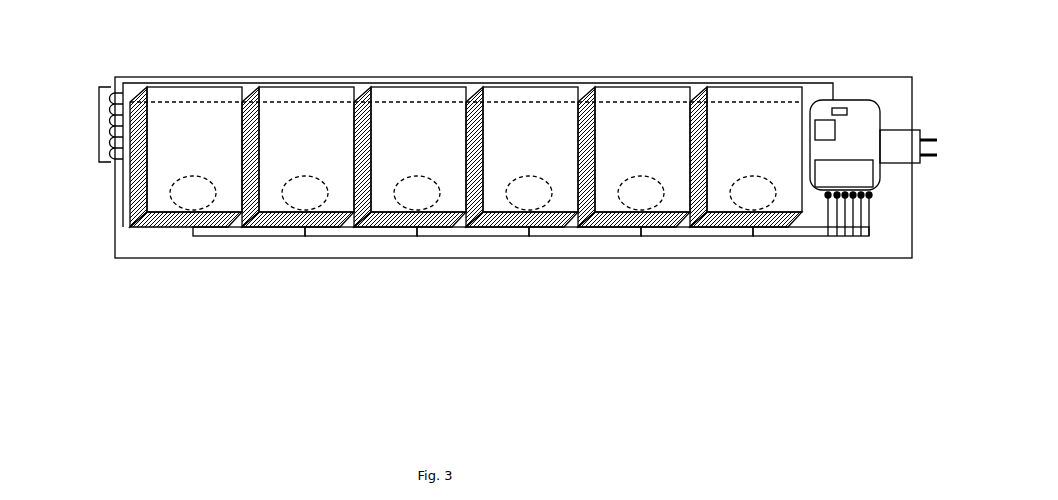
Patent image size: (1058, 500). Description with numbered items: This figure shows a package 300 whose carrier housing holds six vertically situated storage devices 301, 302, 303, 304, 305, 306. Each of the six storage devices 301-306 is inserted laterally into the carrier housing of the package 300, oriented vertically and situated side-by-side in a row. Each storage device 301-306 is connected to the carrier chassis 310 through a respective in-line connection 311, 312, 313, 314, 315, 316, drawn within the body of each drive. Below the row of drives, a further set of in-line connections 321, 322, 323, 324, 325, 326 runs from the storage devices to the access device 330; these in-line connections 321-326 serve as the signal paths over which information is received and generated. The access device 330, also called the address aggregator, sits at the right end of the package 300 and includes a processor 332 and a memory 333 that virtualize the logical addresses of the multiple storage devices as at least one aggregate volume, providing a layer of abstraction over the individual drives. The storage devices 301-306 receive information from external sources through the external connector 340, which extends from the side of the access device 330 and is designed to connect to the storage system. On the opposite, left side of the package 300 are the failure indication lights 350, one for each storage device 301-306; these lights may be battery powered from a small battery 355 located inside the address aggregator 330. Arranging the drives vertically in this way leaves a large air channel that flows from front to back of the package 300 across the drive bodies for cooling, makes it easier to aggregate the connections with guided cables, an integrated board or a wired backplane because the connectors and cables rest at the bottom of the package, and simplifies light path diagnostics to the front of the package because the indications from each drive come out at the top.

The package 300 is at (132, 258).
The carrier chassis 310 is at (160, 217).
The failure indication lights 350 is at (99, 123).
The storage device 301 is at (186, 157).
The storage device 302 is at (298, 157).
The storage device 303 is at (410, 157).
The storage device 304 is at (522, 157).
The storage device 305 is at (634, 157).
The storage device 306 is at (746, 157).
The in-line connection 311 is at (193, 193).
The in-line connection 312 is at (305, 193).
The in-line connection 313 is at (417, 193).
The in-line connection 314 is at (529, 193).
The in-line connection 315 is at (641, 193).
The in-line connection 316 is at (753, 193).
The in-line connection 321 is at (242, 237).
The in-line connection 322 is at (353, 237).
The in-line connection 323 is at (465, 237).
The in-line connection 324 is at (593, 237).
The in-line connection 325 is at (689, 237).
The in-line connection 326 is at (785, 237).
The access device 330 is at (845, 168).
The processor 332 is at (844, 173).
The memory 333 is at (825, 140).
The small battery 355 is at (840, 108).
The external connector 340 is at (908, 146).